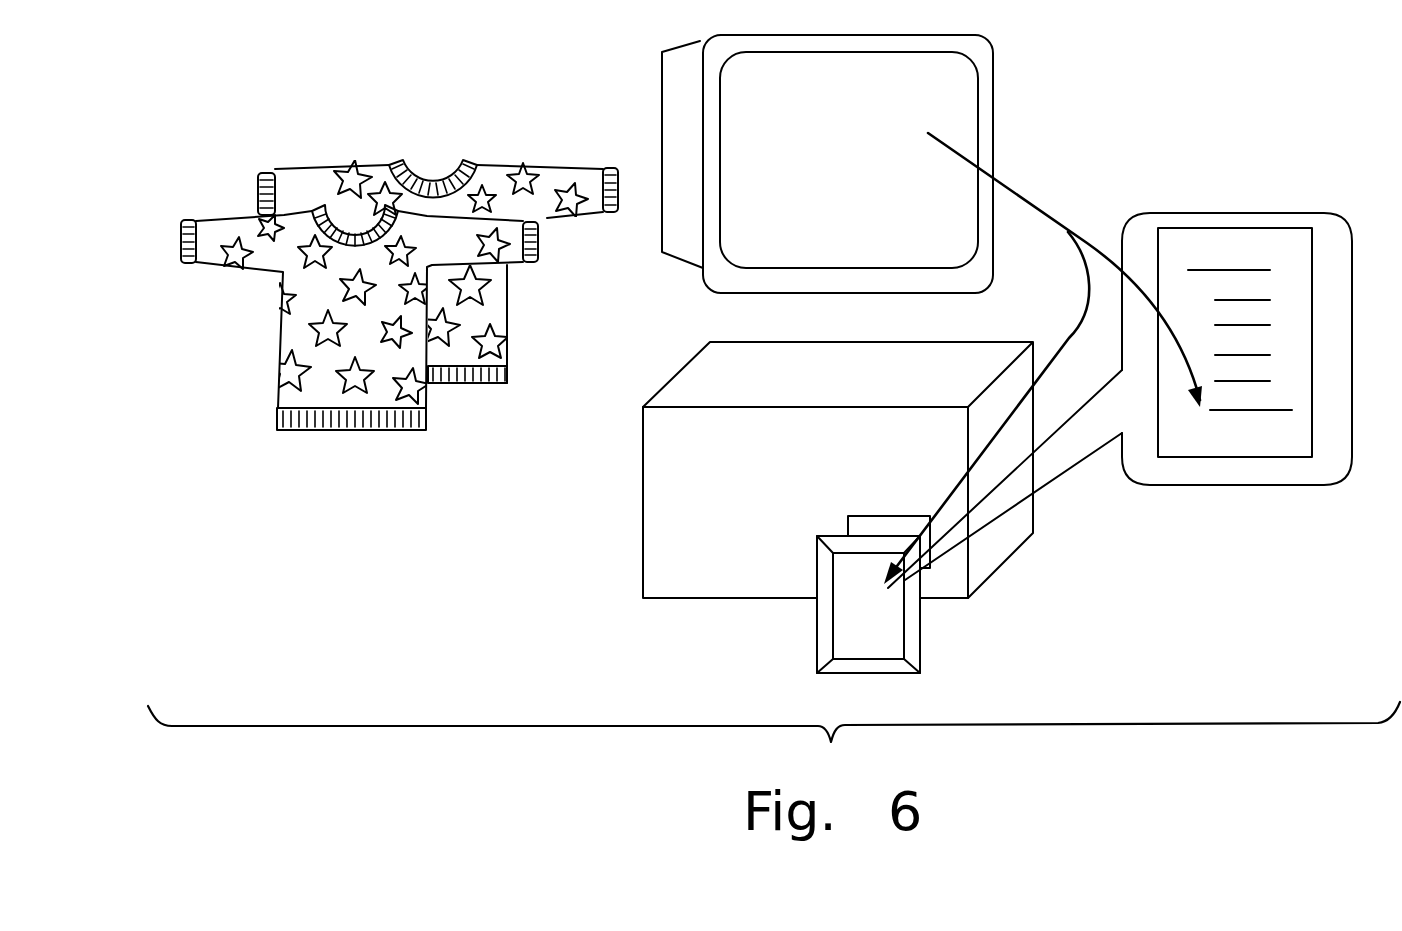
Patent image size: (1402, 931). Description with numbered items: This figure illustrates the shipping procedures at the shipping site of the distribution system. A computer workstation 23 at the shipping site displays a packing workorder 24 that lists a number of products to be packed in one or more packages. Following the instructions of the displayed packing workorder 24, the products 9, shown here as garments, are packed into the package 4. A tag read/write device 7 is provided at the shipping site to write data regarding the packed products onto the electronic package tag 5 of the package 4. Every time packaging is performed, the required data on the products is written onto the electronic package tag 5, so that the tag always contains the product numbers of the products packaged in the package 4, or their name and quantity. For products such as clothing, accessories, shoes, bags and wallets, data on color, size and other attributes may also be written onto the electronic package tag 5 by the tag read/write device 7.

The products 9 is at (228, 210).
The computer workstation 23 is at (993, 108).
The packing workorder 24 is at (1258, 228).
The package 4 is at (643, 512).
The electronic package tag 5 is at (867, 515).
The tag read/write device 7 is at (817, 633).